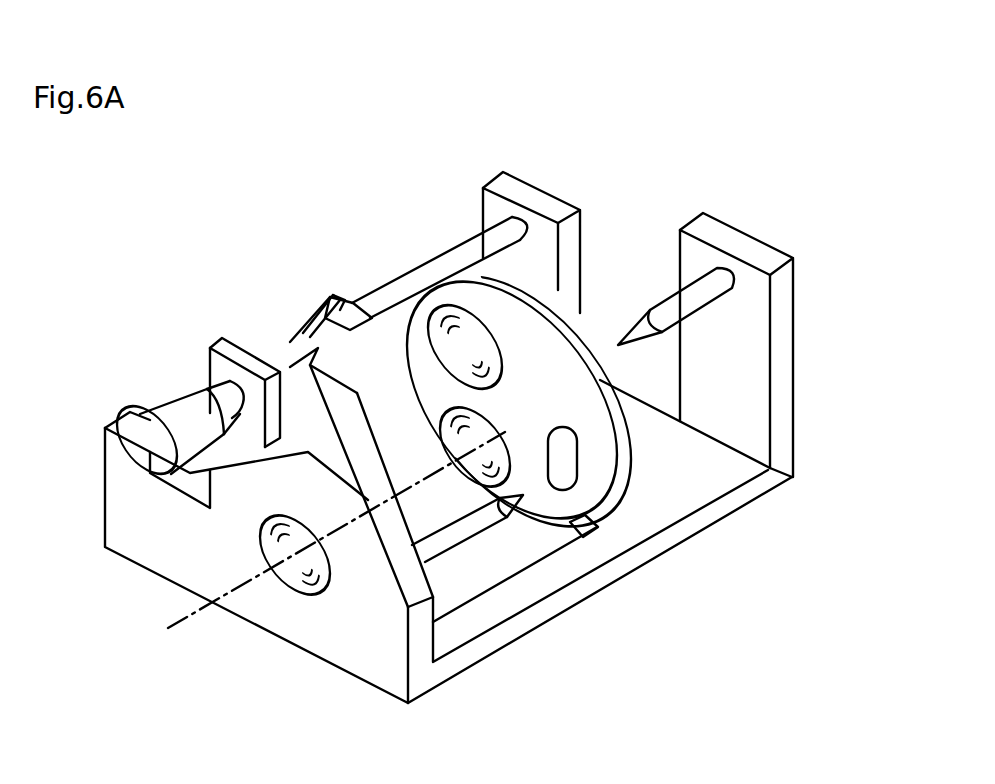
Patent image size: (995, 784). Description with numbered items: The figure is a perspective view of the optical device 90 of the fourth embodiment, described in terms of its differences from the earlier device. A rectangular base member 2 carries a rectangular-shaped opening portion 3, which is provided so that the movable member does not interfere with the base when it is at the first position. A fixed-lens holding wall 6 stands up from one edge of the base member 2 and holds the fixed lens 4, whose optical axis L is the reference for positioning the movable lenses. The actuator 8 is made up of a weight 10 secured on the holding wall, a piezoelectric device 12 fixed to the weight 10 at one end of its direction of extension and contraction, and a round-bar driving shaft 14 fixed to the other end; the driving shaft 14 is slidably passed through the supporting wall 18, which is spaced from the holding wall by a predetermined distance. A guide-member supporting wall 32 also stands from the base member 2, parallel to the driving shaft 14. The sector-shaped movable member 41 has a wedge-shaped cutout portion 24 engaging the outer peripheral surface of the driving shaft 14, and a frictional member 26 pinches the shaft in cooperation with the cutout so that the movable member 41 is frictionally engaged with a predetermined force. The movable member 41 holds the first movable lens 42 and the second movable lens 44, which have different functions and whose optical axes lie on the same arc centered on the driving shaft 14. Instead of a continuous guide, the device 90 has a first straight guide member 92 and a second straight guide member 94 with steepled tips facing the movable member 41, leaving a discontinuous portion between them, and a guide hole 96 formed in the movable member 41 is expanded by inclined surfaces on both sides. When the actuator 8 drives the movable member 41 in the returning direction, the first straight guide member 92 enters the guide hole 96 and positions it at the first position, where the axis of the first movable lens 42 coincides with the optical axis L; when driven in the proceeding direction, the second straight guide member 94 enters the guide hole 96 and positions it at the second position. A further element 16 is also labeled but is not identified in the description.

The optical device 90 is at (517, 85).
The base member 2 is at (672, 550).
The opening portion 3 is at (518, 565).
The fixed lens 4 is at (287, 582).
The fixed-lens holding wall 6 is at (190, 508).
The actuator 8 is at (250, 252).
The weight 10 is at (142, 412).
The piezoelectric device 12 is at (188, 397).
The driving shaft 14 is at (277, 347).
The groove 16 is at (246, 472).
The supporting wall 18 is at (535, 183).
The wedge-shaped cutout portion 24 is at (345, 315).
The frictional member 26 is at (328, 300).
The guide-member supporting wall 32 is at (733, 229).
The movable member 41 is at (600, 320).
The first movable lens 42 is at (445, 351).
The second movable lens 44 is at (447, 440).
The first straight guide member 92 is at (453, 543).
The second straight guide member 94 is at (677, 340).
The guide hole 96 is at (567, 452).
The optical axis L is at (336, 571).